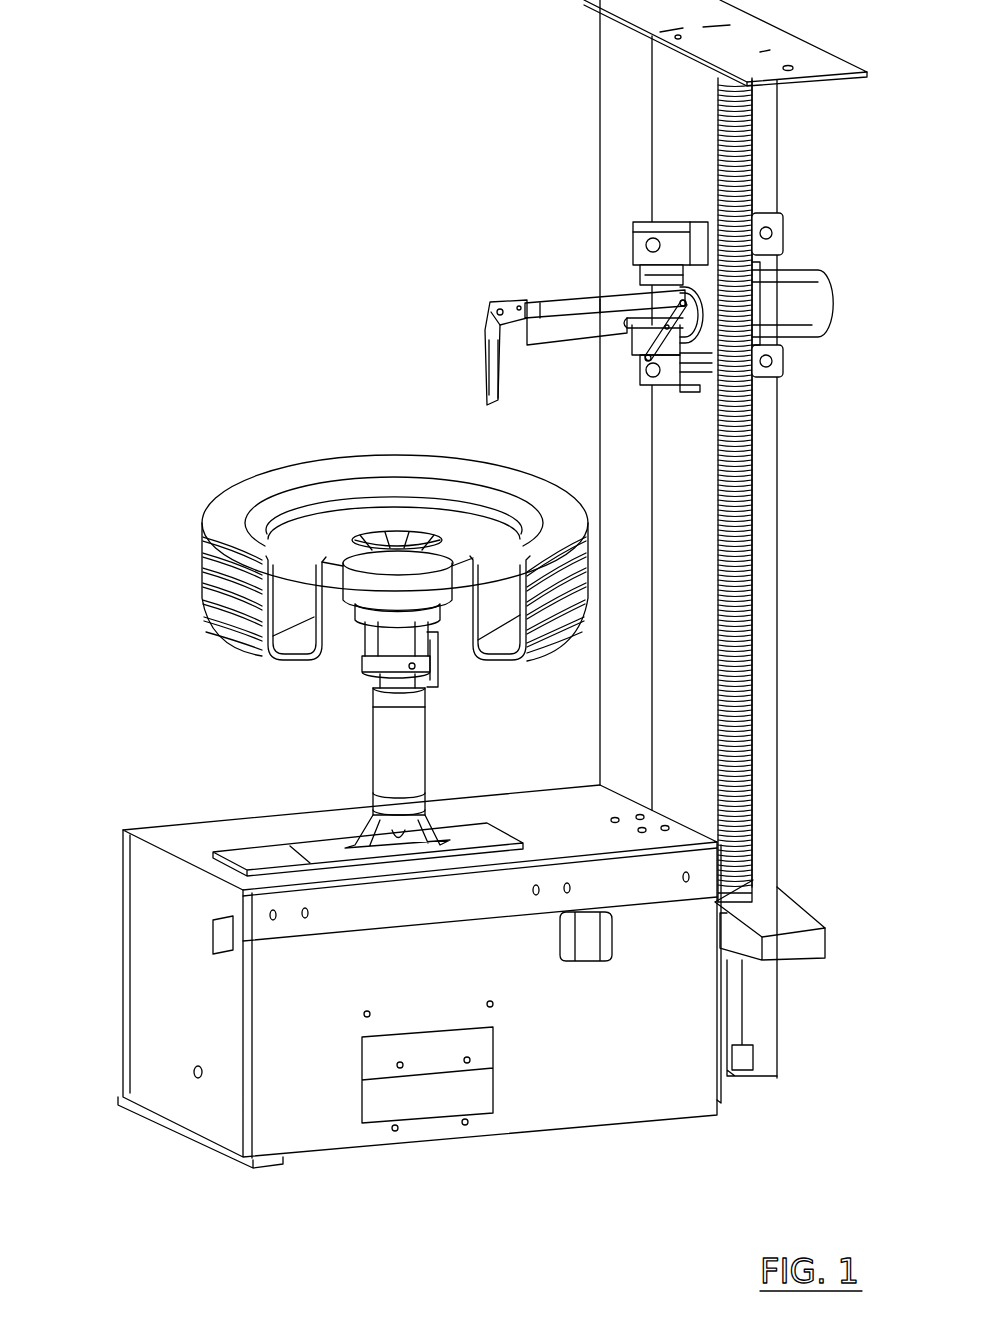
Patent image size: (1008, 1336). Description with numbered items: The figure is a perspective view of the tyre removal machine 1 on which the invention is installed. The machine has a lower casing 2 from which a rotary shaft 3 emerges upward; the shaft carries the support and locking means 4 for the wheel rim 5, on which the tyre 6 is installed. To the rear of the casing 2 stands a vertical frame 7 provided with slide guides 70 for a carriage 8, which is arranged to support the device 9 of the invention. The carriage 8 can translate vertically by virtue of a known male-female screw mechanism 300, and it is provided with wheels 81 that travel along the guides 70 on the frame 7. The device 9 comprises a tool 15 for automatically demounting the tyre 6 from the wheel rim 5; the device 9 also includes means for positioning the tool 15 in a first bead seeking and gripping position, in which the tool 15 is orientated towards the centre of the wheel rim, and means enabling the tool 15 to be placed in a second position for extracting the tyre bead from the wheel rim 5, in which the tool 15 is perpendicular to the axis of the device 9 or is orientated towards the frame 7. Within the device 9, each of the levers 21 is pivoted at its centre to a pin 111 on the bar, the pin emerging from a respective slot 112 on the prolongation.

The tyre removal machine 1 is at (373, 204).
The lower casing 2 is at (527, 1115).
The rotary shaft 3 is at (420, 740).
The support and locking means 4 is at (340, 518).
The wheel rim 5 is at (326, 608).
The tyre 6 is at (203, 573).
The vertical frame 7 is at (600, 128).
The carriage 8 is at (705, 375).
The device 9 is at (470, 306).
The tool 15 is at (487, 360).
The levers 21 is at (690, 392).
The slide guides 70 is at (645, 200).
The wheels 81 is at (633, 245).
The pin 111 is at (700, 360).
The slot 112 is at (630, 337).
The male-female screw mechanism 300 is at (762, 620).